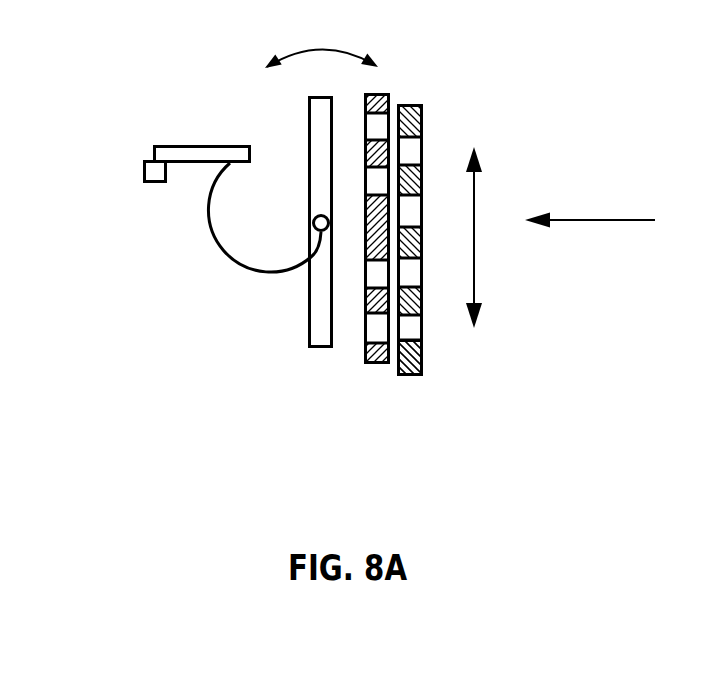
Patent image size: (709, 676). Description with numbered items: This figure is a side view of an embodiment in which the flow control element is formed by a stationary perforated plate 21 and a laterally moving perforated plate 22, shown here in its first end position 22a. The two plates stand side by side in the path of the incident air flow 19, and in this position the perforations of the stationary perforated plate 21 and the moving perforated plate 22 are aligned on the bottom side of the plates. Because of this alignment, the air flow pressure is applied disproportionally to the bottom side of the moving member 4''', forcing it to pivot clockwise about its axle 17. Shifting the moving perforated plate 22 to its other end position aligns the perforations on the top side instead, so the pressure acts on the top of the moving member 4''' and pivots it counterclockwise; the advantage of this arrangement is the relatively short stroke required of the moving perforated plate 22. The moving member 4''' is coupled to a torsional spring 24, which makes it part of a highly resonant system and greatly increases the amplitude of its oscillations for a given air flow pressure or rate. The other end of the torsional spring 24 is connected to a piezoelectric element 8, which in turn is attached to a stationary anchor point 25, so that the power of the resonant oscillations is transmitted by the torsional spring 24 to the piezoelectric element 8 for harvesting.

The moving member 4''' is at (254, 204).
The piezoelectric element 8 is at (153, 151).
The stationary anchor point 25 is at (143, 170).
The torsional spring 24 is at (207, 221).
The axle 17 is at (313, 222).
The stationary perforated plate 21 is at (366, 357).
The moving perforated plate 22 is at (421, 103).
The end position of the moving plate 22a is at (422, 362).
The incident air flow 19 is at (590, 202).